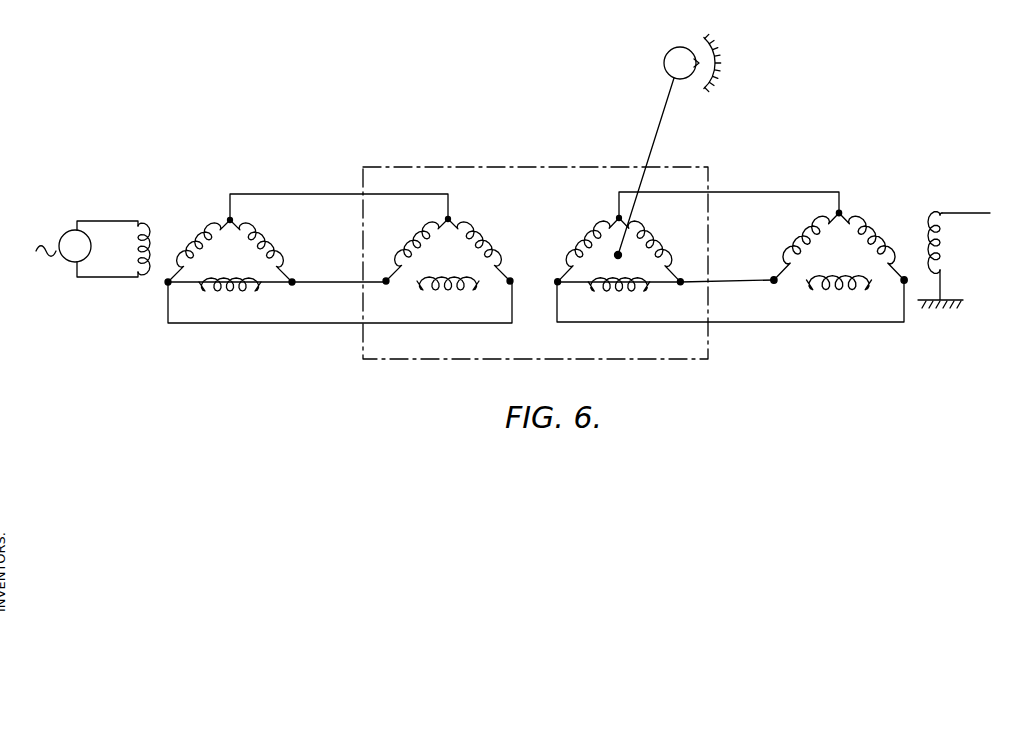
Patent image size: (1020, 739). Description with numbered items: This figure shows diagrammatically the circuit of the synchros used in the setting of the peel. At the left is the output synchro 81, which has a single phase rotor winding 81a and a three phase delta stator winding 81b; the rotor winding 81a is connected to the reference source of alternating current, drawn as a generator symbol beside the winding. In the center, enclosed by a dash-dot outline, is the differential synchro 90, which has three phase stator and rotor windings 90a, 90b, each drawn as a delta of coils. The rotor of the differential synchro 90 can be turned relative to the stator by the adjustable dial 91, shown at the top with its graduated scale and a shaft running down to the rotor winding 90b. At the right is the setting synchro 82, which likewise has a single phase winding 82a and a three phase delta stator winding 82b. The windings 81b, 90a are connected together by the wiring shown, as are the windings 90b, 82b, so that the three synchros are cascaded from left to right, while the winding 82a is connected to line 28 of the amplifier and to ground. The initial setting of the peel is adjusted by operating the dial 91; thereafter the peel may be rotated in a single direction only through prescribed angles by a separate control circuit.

The output synchro 81 is at (136, 325).
The rotor winding 81a is at (153, 210).
The stator winding 81b is at (224, 220).
The differential synchro 90 is at (540, 350).
The stator winding 90a is at (473, 222).
The rotor winding 90b is at (612, 222).
The adjustable dial 91 is at (664, 54).
The setting synchro 82 is at (945, 344).
The rotor winding 82a is at (940, 210).
The stator winding 82b is at (848, 215).
The line 28 is at (987, 211).